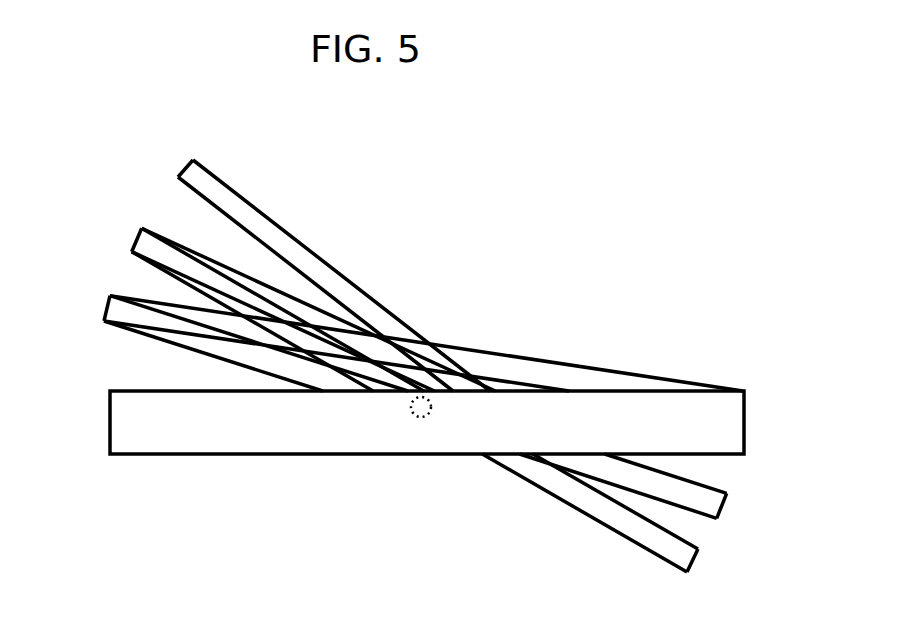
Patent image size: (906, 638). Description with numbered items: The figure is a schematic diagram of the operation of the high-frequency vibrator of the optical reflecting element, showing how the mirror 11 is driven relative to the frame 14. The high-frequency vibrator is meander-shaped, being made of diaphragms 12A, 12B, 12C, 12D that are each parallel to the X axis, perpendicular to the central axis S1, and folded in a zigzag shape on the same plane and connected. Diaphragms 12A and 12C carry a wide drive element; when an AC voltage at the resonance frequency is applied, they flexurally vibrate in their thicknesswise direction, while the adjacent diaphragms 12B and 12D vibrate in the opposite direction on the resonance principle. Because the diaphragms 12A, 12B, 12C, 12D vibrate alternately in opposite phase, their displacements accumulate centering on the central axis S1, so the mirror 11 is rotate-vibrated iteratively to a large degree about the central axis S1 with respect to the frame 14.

The mirror 11 is at (191, 172).
The diaphragm 12A is at (682, 558).
The diaphragm 12B is at (142, 243).
The diaphragm 12C is at (710, 503).
The diaphragm 12D is at (122, 311).
The frame 14 is at (123, 428).
The central axis S1 is at (422, 414).